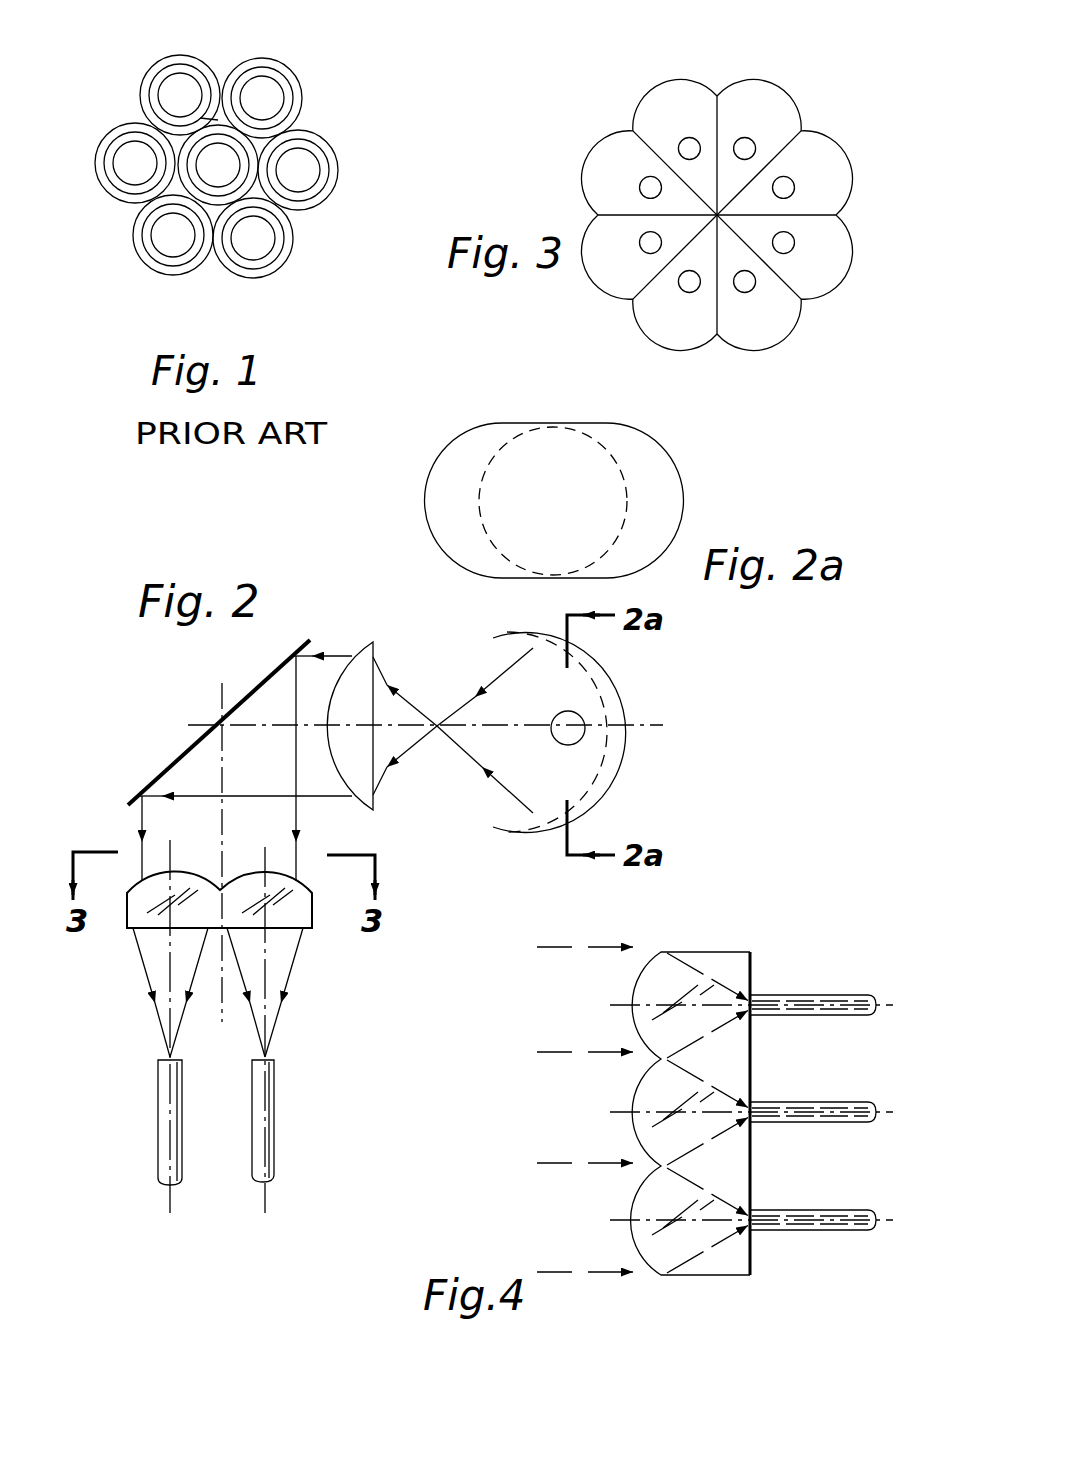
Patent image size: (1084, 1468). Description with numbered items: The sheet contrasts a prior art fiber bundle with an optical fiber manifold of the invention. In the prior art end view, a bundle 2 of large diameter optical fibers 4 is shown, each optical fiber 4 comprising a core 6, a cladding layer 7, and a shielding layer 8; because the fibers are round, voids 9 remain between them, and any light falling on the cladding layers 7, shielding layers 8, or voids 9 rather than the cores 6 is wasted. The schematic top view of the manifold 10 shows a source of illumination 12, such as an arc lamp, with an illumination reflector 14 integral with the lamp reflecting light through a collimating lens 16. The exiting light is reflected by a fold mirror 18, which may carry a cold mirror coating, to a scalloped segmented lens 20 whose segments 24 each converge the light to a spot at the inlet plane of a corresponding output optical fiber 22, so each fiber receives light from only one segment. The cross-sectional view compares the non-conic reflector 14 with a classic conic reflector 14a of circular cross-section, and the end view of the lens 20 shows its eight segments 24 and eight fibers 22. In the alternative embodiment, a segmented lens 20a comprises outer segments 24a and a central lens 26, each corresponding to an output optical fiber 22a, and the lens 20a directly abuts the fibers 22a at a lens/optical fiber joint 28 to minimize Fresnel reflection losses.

In FIG. 1, the bundle 2 is at (160, 292).
In FIG. 1, the optical fiber 4 is at (142, 91).
In FIG. 1, the core 6 is at (295, 178).
In FIG. 1, the cladding layer 7 is at (325, 162).
In FIG. 1, the shielding layer 8 is at (335, 187).
In FIG. 1, the voids 9 is at (216, 118).
In FIG. 2, the optical coupling system 10 is at (135, 735).
In FIG. 2, the source of illumination 12 is at (578, 745).
In FIG. 2A, the illumination reflector 14 is at (437, 543).
In FIG. 2, the illumination reflector 14 is at (619, 650).
In FIG. 2A, the conic illumination reflector 14a is at (495, 455).
In FIG. 2, the collimating lens 16 is at (373, 642).
In FIG. 2, the fold mirror 18 is at (258, 685).
In FIG. 3, the segmented lens 20 is at (840, 290).
In FIG. 2, the segmented lens 20 is at (120, 933).
In FIG. 3, the output optical fibers 22 is at (678, 140).
In FIG. 2, the output optical fibers 22 is at (162, 1120).
In FIG. 3, the lens segments 24 is at (697, 98).
In FIG. 2, the lens segments 24 is at (158, 913).
In FIG. 4, the segmented lens 20a is at (702, 1277).
In FIG. 4, the output optical fibers 22a is at (847, 995).
In FIG. 4, the outer segments 24a is at (722, 965).
In FIG. 4, the central lens 26 is at (655, 1082).
In FIG. 4, the lens/optical fiber joint 28 is at (752, 970).